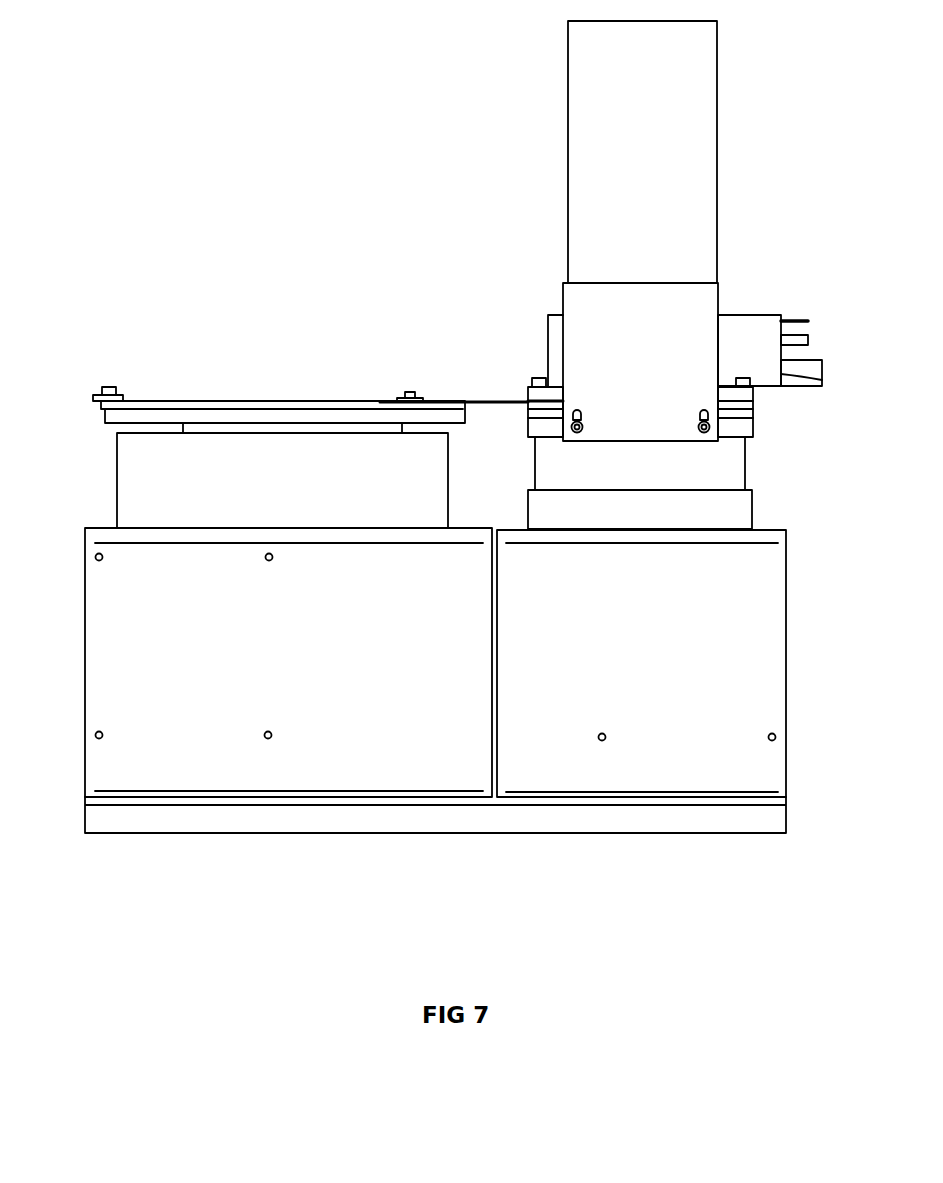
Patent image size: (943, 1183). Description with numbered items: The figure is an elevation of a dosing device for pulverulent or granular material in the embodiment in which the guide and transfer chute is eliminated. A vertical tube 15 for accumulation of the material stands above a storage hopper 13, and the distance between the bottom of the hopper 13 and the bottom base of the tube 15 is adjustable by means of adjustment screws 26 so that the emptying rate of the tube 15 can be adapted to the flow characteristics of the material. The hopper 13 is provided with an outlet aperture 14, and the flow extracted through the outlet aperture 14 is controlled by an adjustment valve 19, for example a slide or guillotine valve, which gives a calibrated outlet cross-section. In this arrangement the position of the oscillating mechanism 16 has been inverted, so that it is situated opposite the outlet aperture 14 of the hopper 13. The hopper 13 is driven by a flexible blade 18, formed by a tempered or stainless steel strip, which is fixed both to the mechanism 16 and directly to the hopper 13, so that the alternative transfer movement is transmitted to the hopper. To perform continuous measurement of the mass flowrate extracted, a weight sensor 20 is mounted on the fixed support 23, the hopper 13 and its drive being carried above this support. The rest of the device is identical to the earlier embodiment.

The storage hopper 13 is at (743, 348).
The outlet aperture 14 is at (822, 380).
The vertical tube 15 is at (580, 129).
The oscillating mechanism 16 is at (122, 472).
The flexible blade 18 is at (493, 400).
The adjustment valve 19 is at (793, 315).
The weight sensor 20 is at (720, 472).
The fixed support 23 is at (678, 763).
The adjustment screws 26 is at (640, 362).